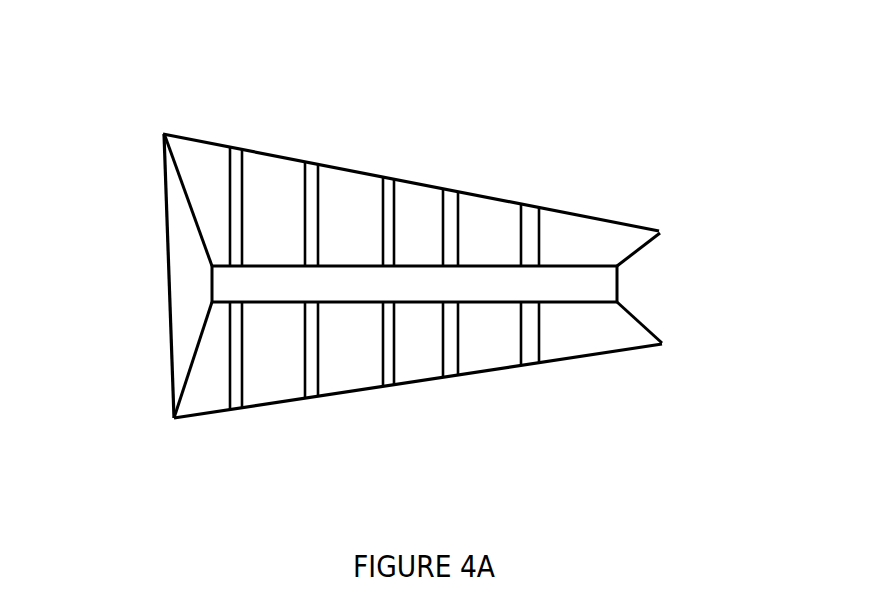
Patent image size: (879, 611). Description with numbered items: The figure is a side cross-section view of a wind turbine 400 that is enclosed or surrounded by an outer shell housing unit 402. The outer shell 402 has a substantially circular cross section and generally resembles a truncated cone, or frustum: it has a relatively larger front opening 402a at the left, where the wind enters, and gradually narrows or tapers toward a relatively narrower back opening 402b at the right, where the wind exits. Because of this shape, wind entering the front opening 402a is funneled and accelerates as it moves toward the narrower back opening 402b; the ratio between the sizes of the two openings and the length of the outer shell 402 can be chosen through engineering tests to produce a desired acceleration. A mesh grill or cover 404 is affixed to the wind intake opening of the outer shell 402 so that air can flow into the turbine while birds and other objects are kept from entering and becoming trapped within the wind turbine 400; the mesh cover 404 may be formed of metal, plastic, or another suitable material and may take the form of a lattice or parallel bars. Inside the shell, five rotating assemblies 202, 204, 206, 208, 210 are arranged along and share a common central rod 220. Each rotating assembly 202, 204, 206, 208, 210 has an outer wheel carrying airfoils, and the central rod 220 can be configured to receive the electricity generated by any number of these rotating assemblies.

The wind turbine 400 is at (206, 84).
The outer shell housing unit 402 is at (417, 183).
The front opening 402a is at (162, 130).
The back opening 402b is at (658, 220).
The mesh cover 404 is at (167, 293).
The central rod 220 is at (618, 282).
The rotating assembly 202 is at (216, 403).
The rotating assembly 204 is at (288, 400).
The rotating assembly 206 is at (367, 397).
The rotating assembly 208 is at (460, 360).
The rotating assembly 210 is at (543, 348).